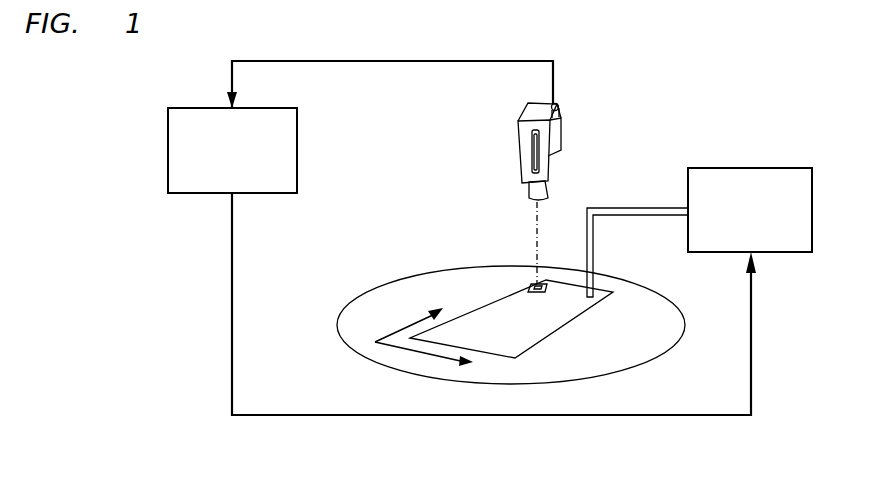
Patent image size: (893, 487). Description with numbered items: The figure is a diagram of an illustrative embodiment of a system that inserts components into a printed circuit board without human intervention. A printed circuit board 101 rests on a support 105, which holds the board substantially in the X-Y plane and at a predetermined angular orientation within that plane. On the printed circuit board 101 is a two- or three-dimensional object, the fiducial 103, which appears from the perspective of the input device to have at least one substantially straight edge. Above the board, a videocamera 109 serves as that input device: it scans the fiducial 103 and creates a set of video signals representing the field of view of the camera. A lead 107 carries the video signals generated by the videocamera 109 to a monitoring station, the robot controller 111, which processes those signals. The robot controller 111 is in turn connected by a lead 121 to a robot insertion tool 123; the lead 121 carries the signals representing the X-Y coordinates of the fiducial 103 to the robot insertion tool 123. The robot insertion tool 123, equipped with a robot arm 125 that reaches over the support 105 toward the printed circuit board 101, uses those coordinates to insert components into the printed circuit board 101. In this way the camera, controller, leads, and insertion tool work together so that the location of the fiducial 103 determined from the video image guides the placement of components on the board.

The printed circuit board 101 is at (498, 303).
The fiducial 103 is at (530, 287).
The support 105 is at (380, 297).
The lead 107 is at (515, 61).
The videocamera 109 is at (562, 125).
The robot controller 111 is at (268, 108).
The lead 121 is at (752, 318).
The robot insertion tool 123 is at (760, 168).
The robot arm 125 is at (650, 207).